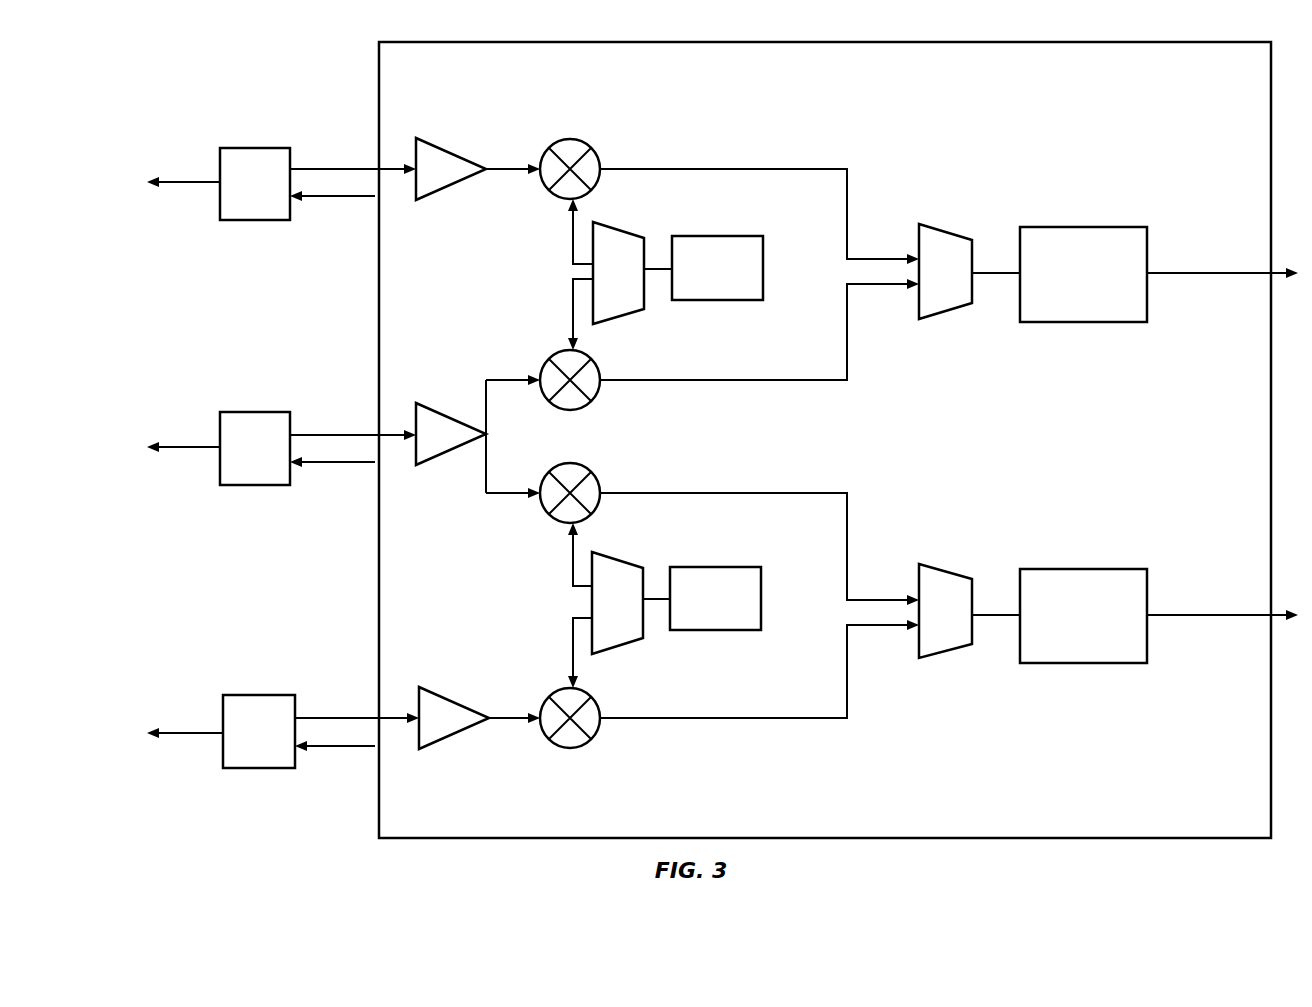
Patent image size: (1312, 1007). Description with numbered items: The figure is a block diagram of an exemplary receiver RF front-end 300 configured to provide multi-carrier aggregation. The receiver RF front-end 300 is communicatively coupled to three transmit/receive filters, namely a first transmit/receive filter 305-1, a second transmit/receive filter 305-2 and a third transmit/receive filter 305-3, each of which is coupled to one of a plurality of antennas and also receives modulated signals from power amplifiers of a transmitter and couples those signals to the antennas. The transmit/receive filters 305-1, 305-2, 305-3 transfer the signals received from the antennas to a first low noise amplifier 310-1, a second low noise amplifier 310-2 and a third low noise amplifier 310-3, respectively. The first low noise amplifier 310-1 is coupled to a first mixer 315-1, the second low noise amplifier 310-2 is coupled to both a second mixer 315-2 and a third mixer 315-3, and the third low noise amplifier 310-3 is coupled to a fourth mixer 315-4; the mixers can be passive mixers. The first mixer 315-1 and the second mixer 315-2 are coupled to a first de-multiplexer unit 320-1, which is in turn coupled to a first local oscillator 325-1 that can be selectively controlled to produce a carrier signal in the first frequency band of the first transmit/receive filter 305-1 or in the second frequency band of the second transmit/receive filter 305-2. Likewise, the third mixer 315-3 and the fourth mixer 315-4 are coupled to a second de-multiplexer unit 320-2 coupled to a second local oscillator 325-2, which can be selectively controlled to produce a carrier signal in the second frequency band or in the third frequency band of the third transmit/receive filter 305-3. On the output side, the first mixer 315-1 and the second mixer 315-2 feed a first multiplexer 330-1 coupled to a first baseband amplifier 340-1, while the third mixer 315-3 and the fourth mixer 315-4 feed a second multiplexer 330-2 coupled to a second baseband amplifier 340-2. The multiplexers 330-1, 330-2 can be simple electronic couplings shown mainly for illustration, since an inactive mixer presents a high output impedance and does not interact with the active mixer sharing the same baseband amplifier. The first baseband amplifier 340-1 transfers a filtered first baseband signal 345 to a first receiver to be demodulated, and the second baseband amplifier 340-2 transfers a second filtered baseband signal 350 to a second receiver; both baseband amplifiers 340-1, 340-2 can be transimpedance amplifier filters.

The receiver RF front-end 300 is at (363, 80).
The first transmit/receive filter 305-1 is at (252, 148).
The second transmit/receive filter 305-2 is at (252, 412).
The third transmit/receive filter 305-3 is at (252, 695).
The first low noise amplifier 310-1 is at (444, 147).
The second low noise amplifier 310-2 is at (444, 412).
The third low noise amplifier 310-3 is at (446, 699).
The first mixer 315-1 is at (558, 142).
The second mixer 315-2 is at (557, 354).
The third mixer 315-3 is at (557, 467).
The fourth mixer 315-4 is at (557, 691).
The first de-multiplexer unit 320-1 is at (619, 232).
The second de-multiplexer unit 320-2 is at (619, 560).
The first local oscillator 325-1 is at (720, 236).
The second local oscillator 325-2 is at (720, 567).
The first multiplexer 330-1 is at (945, 232).
The second multiplexer 330-2 is at (945, 572).
The first baseband amplifier 340-1 is at (1080, 227).
The second baseband amplifier 340-2 is at (1080, 569).
The filtered first baseband signal 345 is at (1208, 274).
The second filtered baseband signal 350 is at (1208, 616).